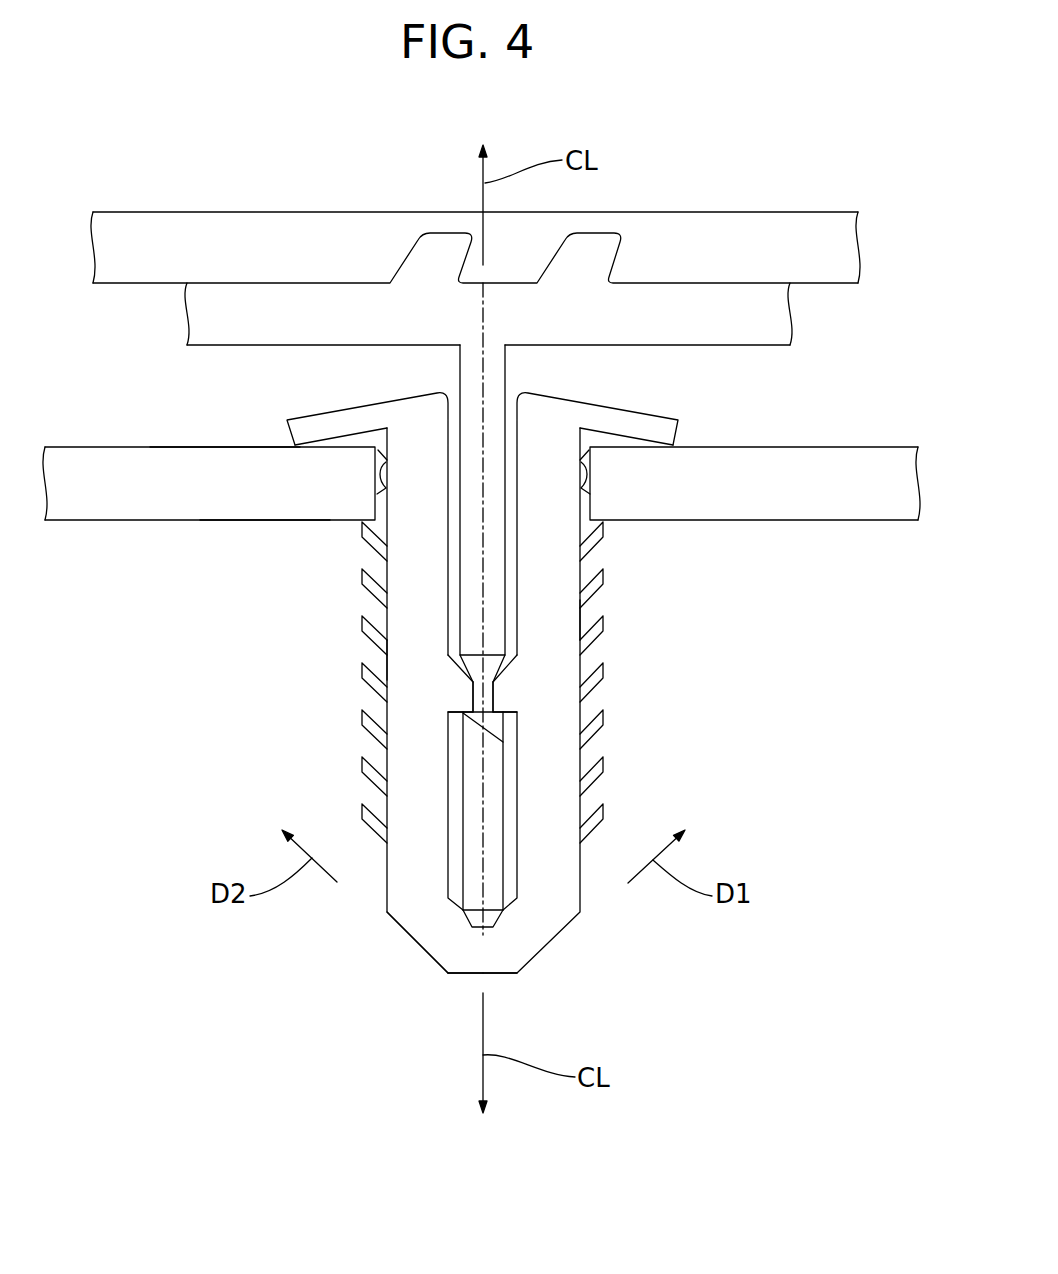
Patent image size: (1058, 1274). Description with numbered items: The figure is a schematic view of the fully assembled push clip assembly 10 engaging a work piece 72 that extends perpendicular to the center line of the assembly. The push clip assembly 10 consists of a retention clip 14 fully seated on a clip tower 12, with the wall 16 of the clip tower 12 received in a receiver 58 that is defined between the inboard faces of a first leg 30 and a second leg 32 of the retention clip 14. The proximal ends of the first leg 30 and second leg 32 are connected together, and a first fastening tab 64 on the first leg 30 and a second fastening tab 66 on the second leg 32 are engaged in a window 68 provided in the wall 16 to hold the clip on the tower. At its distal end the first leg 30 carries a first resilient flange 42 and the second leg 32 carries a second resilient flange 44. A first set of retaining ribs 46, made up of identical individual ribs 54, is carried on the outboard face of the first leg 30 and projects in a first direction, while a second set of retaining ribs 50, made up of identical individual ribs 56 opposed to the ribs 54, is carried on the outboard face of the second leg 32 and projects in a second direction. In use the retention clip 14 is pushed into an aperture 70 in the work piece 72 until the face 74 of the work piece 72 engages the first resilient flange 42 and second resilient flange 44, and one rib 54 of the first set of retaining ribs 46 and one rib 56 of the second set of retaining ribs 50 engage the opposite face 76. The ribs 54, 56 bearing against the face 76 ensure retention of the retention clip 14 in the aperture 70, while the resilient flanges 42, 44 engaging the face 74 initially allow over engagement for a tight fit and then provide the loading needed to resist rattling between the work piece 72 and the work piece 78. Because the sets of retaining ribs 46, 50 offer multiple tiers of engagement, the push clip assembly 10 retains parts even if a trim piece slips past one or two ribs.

The push clip assembly 10 is at (310, 960).
The clip tower 12 is at (192, 358).
The retention clip 14 is at (632, 925).
The wall 16 is at (468, 597).
The first leg 30 is at (547, 808).
The second leg 32 is at (413, 792).
The first resilient flange 42 is at (623, 415).
The second resilient flange 44 is at (327, 412).
The first set of retaining ribs 46 is at (657, 622).
The second set of retaining ribs 50 is at (303, 667).
The individual ribs 54 is at (603, 532).
The individual ribs 56 is at (372, 578).
The receiver 58 is at (510, 777).
The first fastening tab 64 is at (497, 693).
The second fastening tab 66 is at (467, 692).
The window 68 is at (492, 663).
The aperture 70 is at (583, 510).
The work piece 72 is at (123, 502).
The face 74 is at (207, 447).
The opposite face 76 is at (257, 522).
The work piece 78 is at (260, 225).